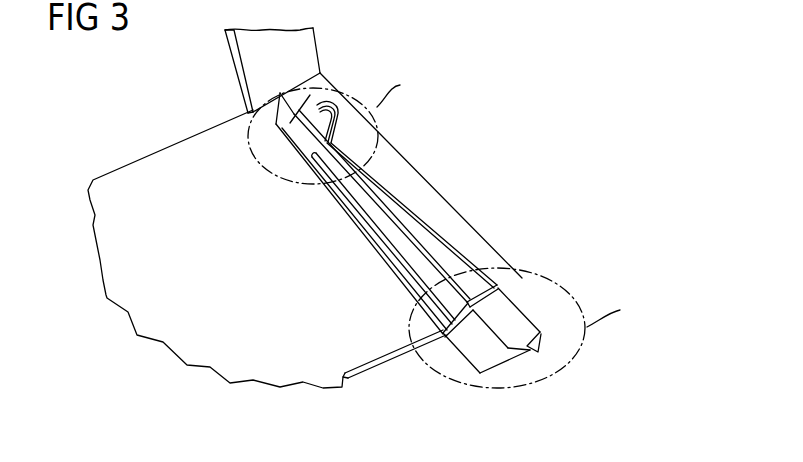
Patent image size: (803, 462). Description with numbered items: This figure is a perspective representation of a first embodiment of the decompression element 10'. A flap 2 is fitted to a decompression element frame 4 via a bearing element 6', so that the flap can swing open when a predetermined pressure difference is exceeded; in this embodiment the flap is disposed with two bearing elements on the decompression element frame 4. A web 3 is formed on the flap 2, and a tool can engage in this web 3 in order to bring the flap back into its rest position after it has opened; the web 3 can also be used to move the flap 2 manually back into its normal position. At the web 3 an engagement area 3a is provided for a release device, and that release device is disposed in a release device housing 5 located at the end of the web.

The mounting arrangement 10' is at (380, 208).
The flap 2 is at (192, 155).
The web 3 is at (430, 273).
The engagement area 3a is at (410, 316).
The decompression element frame 4 is at (408, 188).
The release device housing 5 is at (510, 307).
The bearing element 6' is at (344, 88).